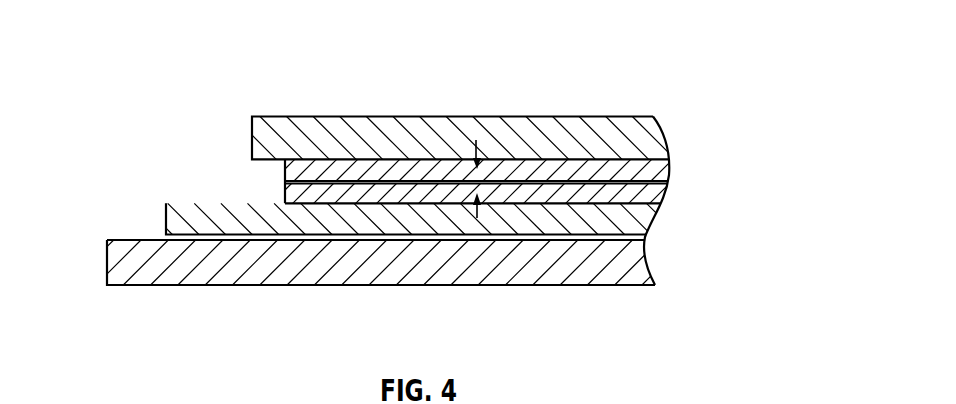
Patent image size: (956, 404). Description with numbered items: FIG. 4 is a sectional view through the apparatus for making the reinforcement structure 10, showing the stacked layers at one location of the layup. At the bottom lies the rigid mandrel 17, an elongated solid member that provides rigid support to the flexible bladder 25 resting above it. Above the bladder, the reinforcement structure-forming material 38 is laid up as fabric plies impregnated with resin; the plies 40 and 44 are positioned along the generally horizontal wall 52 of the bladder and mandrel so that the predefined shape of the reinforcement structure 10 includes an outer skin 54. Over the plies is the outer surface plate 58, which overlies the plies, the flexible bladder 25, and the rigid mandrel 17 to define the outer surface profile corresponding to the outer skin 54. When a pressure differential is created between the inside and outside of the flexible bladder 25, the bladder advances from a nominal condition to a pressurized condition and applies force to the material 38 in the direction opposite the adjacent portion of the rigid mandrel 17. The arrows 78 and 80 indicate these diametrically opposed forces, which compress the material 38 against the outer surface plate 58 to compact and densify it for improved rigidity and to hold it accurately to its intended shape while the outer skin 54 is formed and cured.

The reinforcement structure 10 is at (643, 167).
The rigid mandrel 17 is at (637, 272).
The flexible bladder 25 is at (630, 227).
The reinforcement structure-forming material 38 is at (368, 173).
The ply 40 is at (573, 197).
The ply 44 is at (620, 165).
The generally horizontal wall 52 is at (184, 214).
The outer skin 54 is at (297, 167).
The outer surface plate 58 is at (578, 127).
The arrow 78 is at (471, 147).
The arrow 80 is at (477, 218).